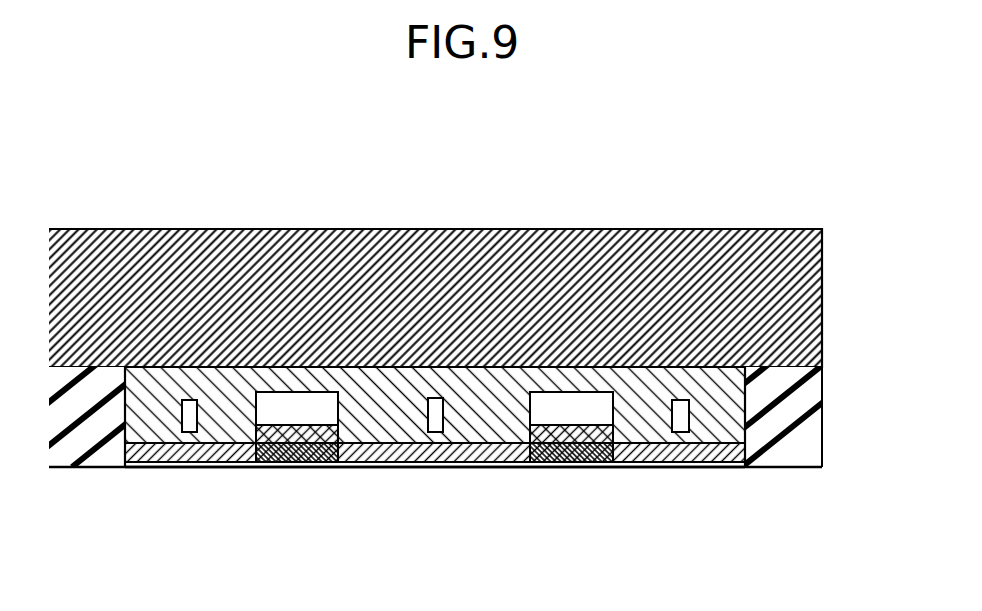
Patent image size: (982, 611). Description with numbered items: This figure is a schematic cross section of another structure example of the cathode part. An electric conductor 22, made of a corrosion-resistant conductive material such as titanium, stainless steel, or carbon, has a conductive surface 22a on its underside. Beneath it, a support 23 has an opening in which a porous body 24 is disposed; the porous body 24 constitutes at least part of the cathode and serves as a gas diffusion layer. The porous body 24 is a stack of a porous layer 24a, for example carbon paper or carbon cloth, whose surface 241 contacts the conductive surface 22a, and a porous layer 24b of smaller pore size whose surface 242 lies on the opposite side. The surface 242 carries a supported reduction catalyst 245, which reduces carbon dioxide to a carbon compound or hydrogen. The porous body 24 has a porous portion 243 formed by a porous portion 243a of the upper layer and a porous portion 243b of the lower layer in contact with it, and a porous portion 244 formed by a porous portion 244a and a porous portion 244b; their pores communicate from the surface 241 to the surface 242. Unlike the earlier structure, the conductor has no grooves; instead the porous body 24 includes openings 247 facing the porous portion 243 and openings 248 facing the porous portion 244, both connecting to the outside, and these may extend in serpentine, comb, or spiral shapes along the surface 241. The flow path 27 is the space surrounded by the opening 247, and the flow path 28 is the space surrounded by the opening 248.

The electric conductor 22 is at (850, 229).
The conductive surface 22a is at (770, 370).
The support 23 is at (81, 467).
The porous body 24 is at (902, 394).
The porous layer 24a is at (850, 367).
The porous layer 24b is at (850, 443).
The flow path 27 is at (188, 407).
The flow path 28 is at (290, 403).
The surface 241 is at (137, 367).
The surface 242 is at (150, 467).
The porous portion 243 is at (748, 525).
The porous portion 243a is at (653, 422).
The porous portion 243b is at (678, 455).
The porous portion 244 is at (408, 547).
The porous portion 244a is at (270, 432).
The porous portion 244b is at (330, 452).
The reduction catalyst 245 is at (505, 456).
The opening 247 is at (203, 433).
The opening 248 is at (376, 456).